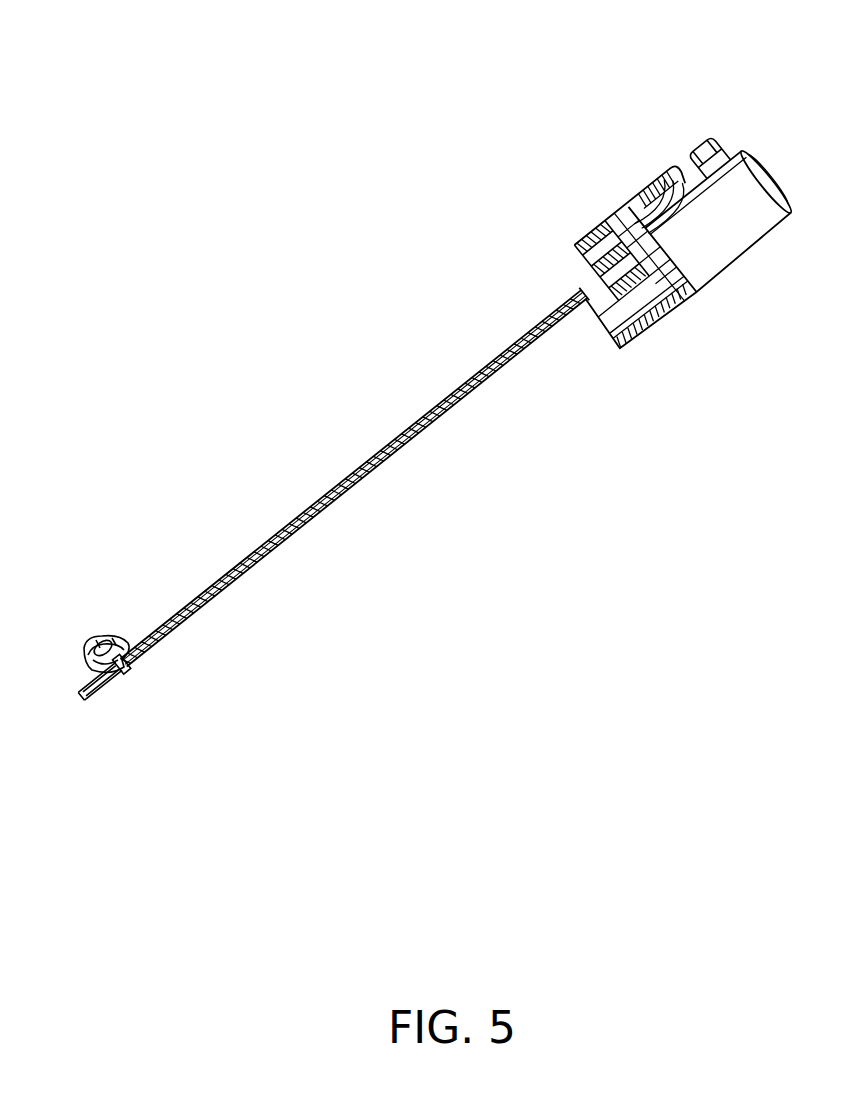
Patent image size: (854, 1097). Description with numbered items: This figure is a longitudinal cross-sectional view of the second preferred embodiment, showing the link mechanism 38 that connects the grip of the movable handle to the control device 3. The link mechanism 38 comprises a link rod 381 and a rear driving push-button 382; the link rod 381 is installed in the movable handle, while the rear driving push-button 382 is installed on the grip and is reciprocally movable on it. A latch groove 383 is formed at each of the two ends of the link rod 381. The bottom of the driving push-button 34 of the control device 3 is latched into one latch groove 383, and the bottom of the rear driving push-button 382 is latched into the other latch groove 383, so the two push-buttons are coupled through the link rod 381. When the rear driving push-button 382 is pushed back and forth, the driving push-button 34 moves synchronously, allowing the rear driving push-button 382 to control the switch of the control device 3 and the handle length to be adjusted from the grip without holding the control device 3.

The control device 3 is at (639, 158).
The driving push-button 34 is at (603, 228).
The link mechanism 38 is at (442, 476).
The link rod 381 is at (365, 460).
The rear driving push-button 382 is at (105, 640).
The latch groove 383 is at (628, 200).